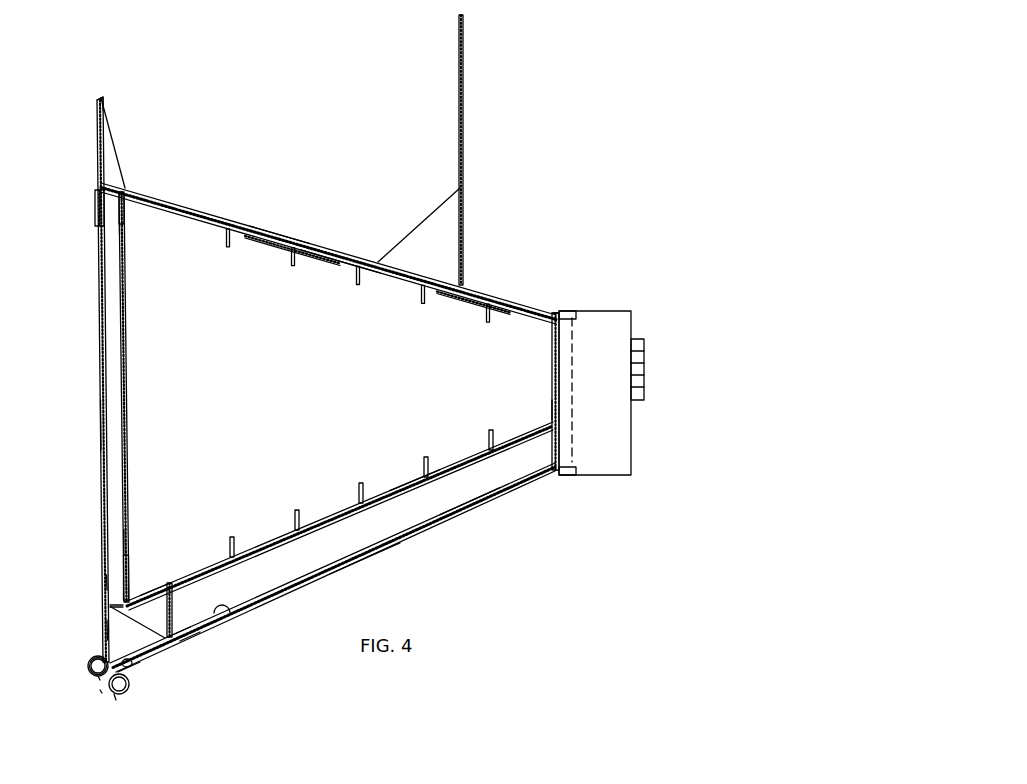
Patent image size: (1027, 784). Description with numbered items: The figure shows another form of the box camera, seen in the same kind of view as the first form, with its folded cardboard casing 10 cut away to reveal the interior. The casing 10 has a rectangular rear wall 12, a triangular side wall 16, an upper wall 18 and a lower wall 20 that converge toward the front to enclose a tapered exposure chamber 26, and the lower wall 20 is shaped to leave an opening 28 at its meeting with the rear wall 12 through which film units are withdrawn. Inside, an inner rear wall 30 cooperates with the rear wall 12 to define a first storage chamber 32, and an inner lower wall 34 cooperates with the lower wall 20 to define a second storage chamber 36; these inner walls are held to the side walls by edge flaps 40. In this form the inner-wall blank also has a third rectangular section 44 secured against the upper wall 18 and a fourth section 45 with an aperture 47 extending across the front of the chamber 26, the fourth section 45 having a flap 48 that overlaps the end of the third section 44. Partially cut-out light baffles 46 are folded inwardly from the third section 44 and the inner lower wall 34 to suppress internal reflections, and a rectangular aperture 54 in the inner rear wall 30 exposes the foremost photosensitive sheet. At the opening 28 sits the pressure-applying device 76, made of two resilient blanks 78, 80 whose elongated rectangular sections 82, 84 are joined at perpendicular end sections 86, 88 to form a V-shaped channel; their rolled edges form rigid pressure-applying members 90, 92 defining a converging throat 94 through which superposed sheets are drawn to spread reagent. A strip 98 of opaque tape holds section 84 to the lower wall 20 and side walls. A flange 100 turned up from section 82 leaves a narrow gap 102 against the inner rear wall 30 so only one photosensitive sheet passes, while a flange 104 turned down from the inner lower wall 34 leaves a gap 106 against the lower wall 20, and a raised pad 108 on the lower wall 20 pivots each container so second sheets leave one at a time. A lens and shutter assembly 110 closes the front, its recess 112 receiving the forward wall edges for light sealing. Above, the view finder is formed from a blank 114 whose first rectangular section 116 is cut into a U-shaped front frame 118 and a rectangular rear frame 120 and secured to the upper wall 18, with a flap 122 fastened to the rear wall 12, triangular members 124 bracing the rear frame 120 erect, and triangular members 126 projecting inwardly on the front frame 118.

The camera casing 10 is at (369, 571).
The rear wall 12 is at (100, 378).
The side wall 16 is at (316, 388).
The upper wall 18 is at (246, 218).
The lower wall 20 is at (412, 538).
The exposure chamber 26 is at (200, 337).
The opening 28 is at (142, 690).
The inner rear wall 30 is at (123, 207).
The first storage chamber 32 is at (101, 428).
The inner lower wall 34 is at (400, 483).
The second storage chamber 36 is at (469, 501).
The edge flaps 40 is at (119, 272).
The third rectangular section 44 is at (334, 262).
The fourth section 45 is at (552, 408).
The light baffles 46 is at (226, 246).
The aperture 47 is at (552, 372).
The flap 48 is at (540, 322).
The rectangular aperture 54 is at (122, 222).
The pressure-applying device 76 is at (82, 659).
The blank 78 is at (84, 675).
The blank 80 is at (126, 703).
The elongated rectangular section 82 is at (108, 630).
The elongated rectangular section 84 is at (133, 668).
The end section 86 is at (121, 642).
The end section 88 is at (160, 597).
The pressure-applying member 90 is at (95, 676).
The pressure-applying member 92 is at (116, 700).
The pressure-generating throat 94 is at (100, 690).
The strip 98 is at (189, 664).
The flange 100 is at (110, 604).
The narrow gap 102 is at (106, 582).
The flange 104 is at (172, 612).
The gap 106 is at (178, 660).
The raised pad 108 is at (228, 617).
The lens and shutter assembly 110 is at (638, 317).
The recess 112 is at (576, 313).
The view finder blank 114 is at (281, 224).
The first rectangular section 116 is at (316, 245).
The front frame 118 is at (463, 30).
The rear frame 120 is at (97, 103).
The flap 122 is at (96, 212).
The triangular members 124 is at (120, 162).
The triangular members 126 is at (436, 214).